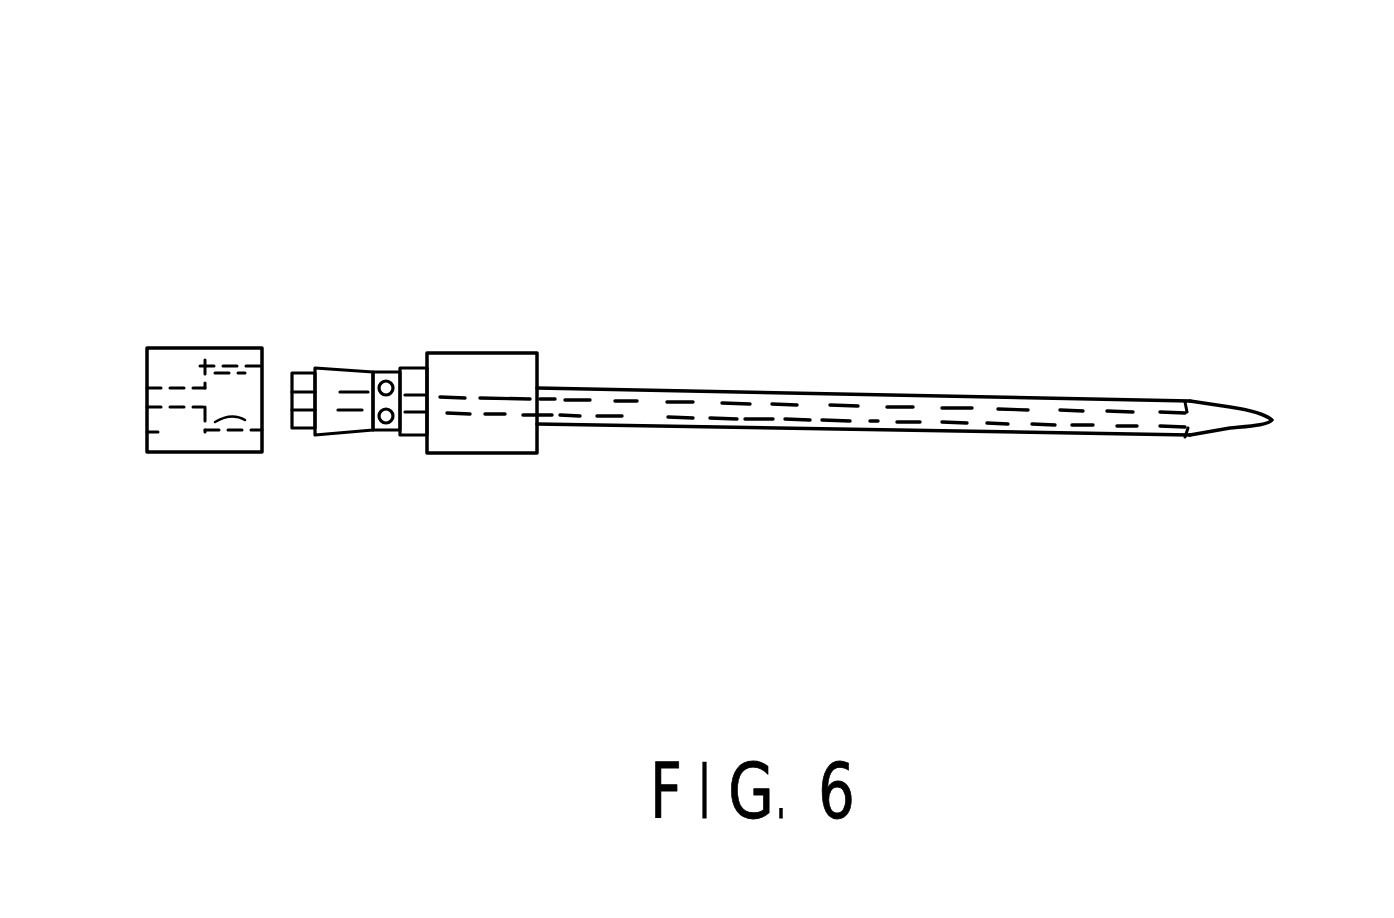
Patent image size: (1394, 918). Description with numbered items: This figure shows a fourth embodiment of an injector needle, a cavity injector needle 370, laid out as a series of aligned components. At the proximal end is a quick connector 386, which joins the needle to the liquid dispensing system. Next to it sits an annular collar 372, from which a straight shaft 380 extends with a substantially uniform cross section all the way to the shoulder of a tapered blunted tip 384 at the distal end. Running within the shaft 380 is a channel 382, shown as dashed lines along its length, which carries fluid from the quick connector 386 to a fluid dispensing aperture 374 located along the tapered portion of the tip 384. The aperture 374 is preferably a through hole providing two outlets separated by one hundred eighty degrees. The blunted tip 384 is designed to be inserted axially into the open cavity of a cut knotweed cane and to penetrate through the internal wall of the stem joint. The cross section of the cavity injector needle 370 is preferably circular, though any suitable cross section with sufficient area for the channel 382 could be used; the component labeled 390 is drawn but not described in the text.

The cavity injector needle 370 is at (898, 122).
The collar 372 is at (480, 340).
The fluid dispensing aperture 374 is at (1192, 400).
The straight shaft 380 is at (857, 392).
The channel 382 is at (633, 400).
The tapered blunted tip 384 is at (1262, 395).
The quick connector 386 is at (315, 345).
The plug 390 is at (163, 333).